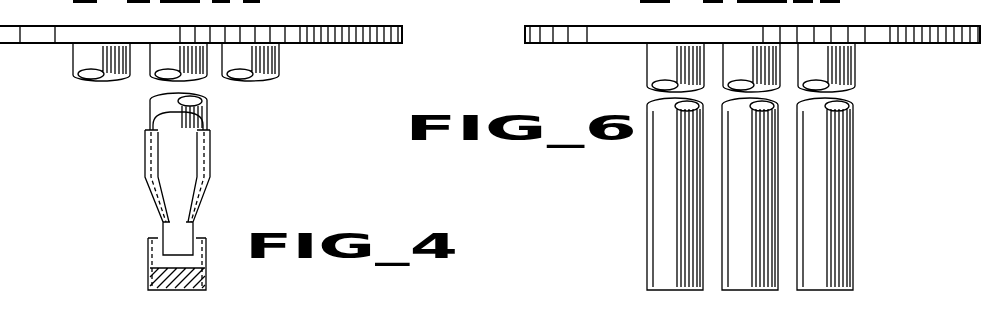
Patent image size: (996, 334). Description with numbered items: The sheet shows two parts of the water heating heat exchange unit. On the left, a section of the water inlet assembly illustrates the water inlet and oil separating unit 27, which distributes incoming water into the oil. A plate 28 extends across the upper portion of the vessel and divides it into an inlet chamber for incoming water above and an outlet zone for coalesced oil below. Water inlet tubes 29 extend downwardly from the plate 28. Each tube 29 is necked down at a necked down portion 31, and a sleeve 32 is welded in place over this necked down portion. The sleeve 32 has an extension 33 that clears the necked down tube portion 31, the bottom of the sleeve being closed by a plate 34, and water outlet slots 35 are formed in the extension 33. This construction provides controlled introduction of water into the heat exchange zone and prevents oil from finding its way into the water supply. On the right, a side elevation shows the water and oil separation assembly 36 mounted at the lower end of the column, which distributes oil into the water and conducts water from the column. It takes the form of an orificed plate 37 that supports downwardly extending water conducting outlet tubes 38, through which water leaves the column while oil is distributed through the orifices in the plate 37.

In FIG. 4, the water inlet and oil separating unit 27 is at (319, 25).
In FIG. 4, the plate 28 is at (57, 32).
In FIG. 4, the water inlet tubes 29 is at (279, 65).
In FIG. 4, the necked down portion 31 is at (208, 218).
In FIG. 4, the sleeve 32 is at (146, 149).
In FIG. 4, the extension 33 is at (150, 262).
In FIG. 4, the plate 34 is at (178, 270).
In FIG. 4, the water outlet slots 35 is at (150, 240).
In FIG. 6, the water and oil separation assembly 36 is at (640, 59).
In FIG. 6, the orificed plate 37 is at (890, 30).
In FIG. 6, the water conducting outlet tubes 38 is at (830, 130).